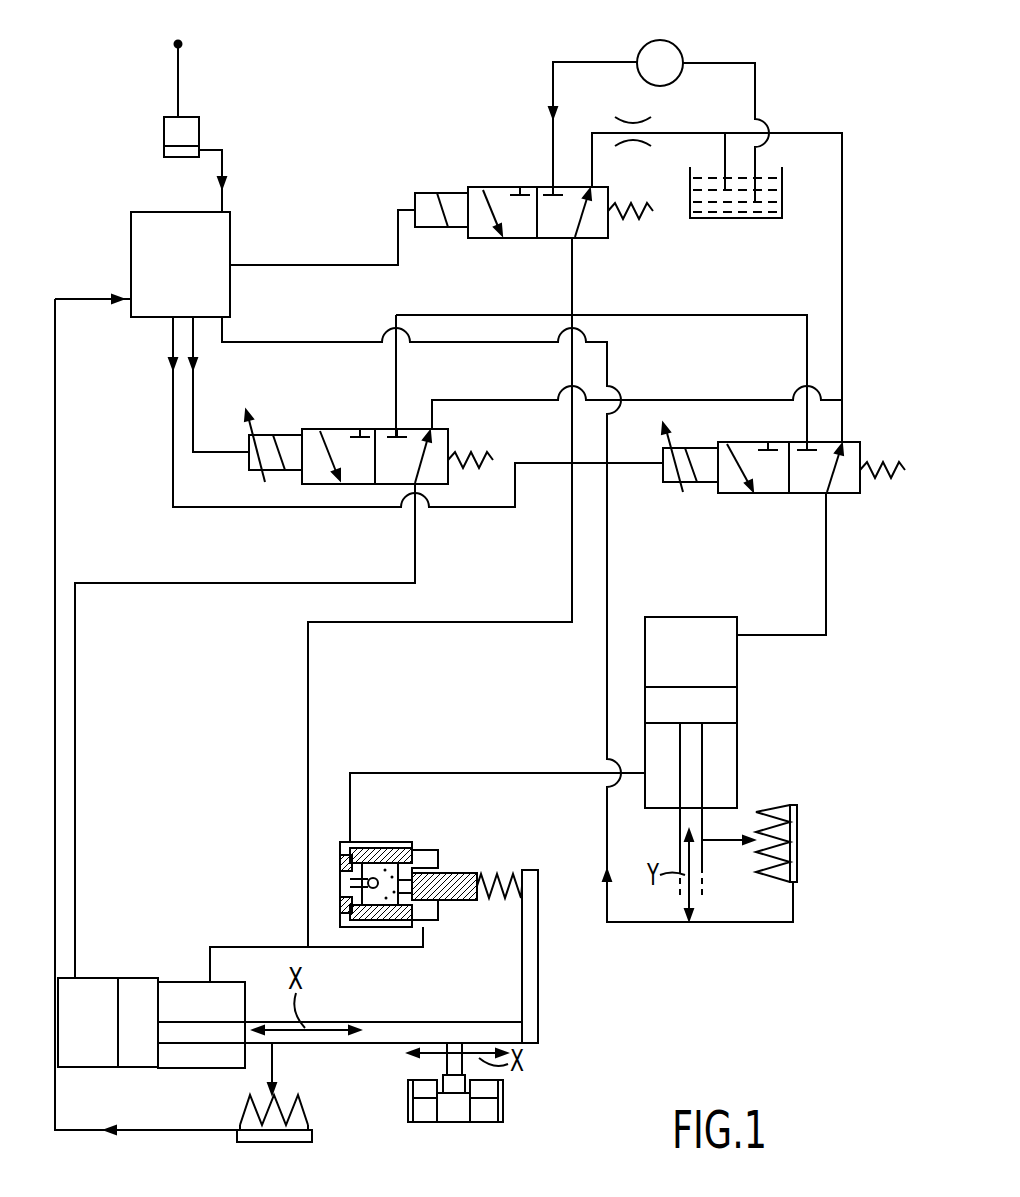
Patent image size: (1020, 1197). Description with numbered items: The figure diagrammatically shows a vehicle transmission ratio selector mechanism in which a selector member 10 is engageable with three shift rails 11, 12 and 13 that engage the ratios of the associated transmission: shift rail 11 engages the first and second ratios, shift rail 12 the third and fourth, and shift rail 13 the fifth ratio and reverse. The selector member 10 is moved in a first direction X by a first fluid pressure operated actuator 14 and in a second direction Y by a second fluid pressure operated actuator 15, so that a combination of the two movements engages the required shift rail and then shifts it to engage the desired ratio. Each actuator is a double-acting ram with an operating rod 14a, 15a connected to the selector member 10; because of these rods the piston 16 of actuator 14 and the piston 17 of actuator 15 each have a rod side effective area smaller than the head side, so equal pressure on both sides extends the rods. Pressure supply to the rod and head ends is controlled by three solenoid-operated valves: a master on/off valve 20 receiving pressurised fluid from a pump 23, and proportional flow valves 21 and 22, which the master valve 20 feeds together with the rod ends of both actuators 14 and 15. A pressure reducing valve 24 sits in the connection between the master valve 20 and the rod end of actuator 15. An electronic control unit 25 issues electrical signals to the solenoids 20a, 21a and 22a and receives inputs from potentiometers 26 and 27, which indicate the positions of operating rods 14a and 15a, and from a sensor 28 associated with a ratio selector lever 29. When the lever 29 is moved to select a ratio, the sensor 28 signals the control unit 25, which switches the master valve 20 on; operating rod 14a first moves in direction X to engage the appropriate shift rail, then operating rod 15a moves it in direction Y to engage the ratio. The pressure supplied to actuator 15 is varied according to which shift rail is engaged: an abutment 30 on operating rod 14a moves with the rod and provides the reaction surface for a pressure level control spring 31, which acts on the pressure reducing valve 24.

The selector member 10 is at (462, 1087).
The shift rail 11 is at (423, 1112).
The shift rail 12 is at (452, 1112).
The shift rail 13 is at (487, 1112).
The first fluid pressure operated actuator 14 is at (90, 990).
The operating rod 14a is at (393, 1025).
The second fluid pressure operated actuator 15 is at (698, 637).
The operating rod 15a is at (692, 763).
The piston 16 is at (142, 986).
The piston 17 is at (728, 712).
The master valve 20 is at (503, 179).
The solenoid 20a is at (428, 192).
The proportional flow valve 21 is at (340, 421).
The solenoid 21a is at (283, 440).
The proportional flow valve 22 is at (790, 437).
The solenoid 22a is at (707, 470).
The pump 23 is at (642, 50).
The pressure reducing valve 24 is at (399, 846).
The electronic control unit 25 is at (180, 264).
The potentiometer 26 is at (297, 1118).
The potentiometer 27 is at (796, 853).
The sensor 28 is at (166, 152).
The ratio selector lever 29 is at (180, 72).
The abutment 30 is at (538, 960).
The pressure level control spring 31 is at (500, 871).